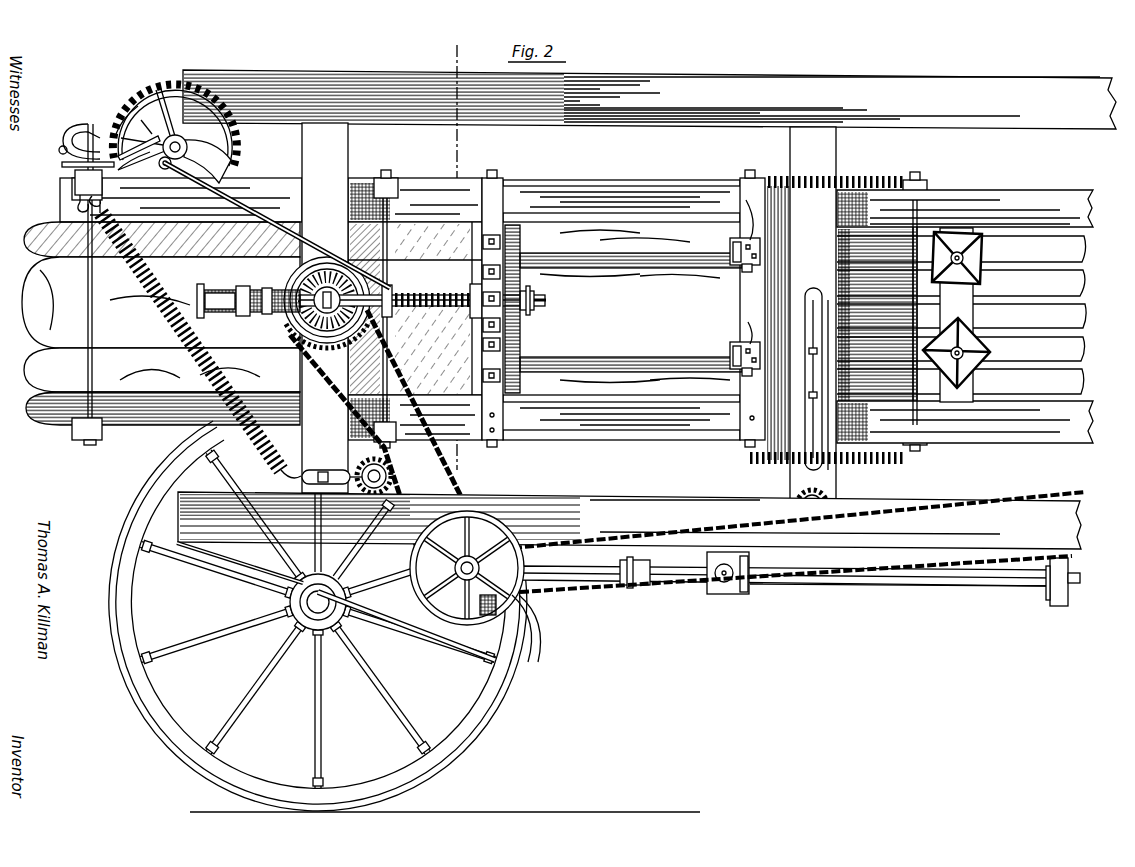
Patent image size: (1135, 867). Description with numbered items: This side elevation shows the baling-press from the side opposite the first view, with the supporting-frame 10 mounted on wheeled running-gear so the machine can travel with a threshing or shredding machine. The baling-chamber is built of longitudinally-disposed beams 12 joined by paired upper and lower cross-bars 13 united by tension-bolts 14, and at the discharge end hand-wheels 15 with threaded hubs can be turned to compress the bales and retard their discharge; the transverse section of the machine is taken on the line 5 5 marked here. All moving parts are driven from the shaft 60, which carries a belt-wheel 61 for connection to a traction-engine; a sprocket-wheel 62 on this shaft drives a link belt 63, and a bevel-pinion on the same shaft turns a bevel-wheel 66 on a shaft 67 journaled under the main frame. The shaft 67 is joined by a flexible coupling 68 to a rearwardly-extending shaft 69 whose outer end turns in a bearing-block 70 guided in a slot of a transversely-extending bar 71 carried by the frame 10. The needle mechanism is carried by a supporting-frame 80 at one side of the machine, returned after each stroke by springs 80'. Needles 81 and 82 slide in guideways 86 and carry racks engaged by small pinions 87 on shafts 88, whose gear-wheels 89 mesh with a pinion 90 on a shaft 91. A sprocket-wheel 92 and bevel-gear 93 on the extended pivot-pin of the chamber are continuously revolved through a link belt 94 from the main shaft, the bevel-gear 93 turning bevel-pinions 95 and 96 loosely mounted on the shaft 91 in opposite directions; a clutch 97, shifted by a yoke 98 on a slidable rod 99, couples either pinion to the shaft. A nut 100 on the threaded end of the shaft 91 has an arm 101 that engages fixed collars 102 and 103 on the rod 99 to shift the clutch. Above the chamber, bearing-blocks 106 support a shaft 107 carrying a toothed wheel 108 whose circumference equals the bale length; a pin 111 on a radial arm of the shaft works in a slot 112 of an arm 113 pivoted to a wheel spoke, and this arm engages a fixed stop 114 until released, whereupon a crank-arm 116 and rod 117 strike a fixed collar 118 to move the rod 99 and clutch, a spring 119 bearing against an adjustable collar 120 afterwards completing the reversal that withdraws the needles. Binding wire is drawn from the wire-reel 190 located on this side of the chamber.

The line 5 5 is at (454, 256).
The supporting-frame 10 is at (637, 497).
The longitudinally-disposed beams 12 is at (1040, 200).
The upper and lower cross-bars 13 is at (393, 182).
The tension-bolts 14 is at (90, 303).
The hand-wheels 15 is at (55, 151).
The shaft 60 is at (495, 540).
The belt-wheel 61 is at (484, 618).
The sprocket-wheel 62 is at (406, 626).
The link belt 63 is at (608, 582).
The bevel-wheel 66 is at (530, 620).
The shaft 67 is at (578, 586).
The flexible coupling 68 is at (722, 594).
The rearwardly-extending shaft 69 is at (976, 588).
The bearing-block 70 is at (1050, 594).
The transversely-extending bar 71 is at (1062, 600).
The supporting-frame 80 is at (623, 317).
The springs 80' is at (827, 313).
The needle 81 is at (730, 246).
The needle 82 is at (730, 348).
The guideways 86 is at (745, 198).
The small pinions 87 is at (740, 270).
The shafts 88 is at (631, 306).
The gear-wheels 89 is at (521, 242).
The pinion 90 is at (538, 312).
The shaft 91 is at (422, 308).
The sprocket-wheel 92 is at (308, 268).
The bevel-gear 93 is at (302, 278).
The link belt 94 is at (456, 490).
The bevel-pinion 95 is at (356, 272).
The bevel-pinion 96 is at (300, 290).
The clutch 97 is at (302, 345).
The yoke 98 is at (328, 287).
The slidable rod 99 is at (215, 292).
The nut 100 is at (238, 313).
The extending arm 101 is at (241, 285).
The fixed collar 102 is at (190, 293).
The fixed collar 103 is at (266, 288).
The bearing-blocks 106 is at (207, 161).
The shaft 107 is at (188, 142).
The toothed wheel 108 is at (158, 94).
The pin 111 is at (117, 120).
The slot 112 is at (134, 150).
The arm 113 is at (156, 119).
The fixed stop 114 is at (78, 135).
The crank-arm 116 is at (181, 200).
The rod 117 is at (258, 188).
The fixed collar 118 is at (388, 285).
The spring 119 is at (432, 286).
The collar 120 is at (470, 293).
The wire-reel 190 is at (982, 268).